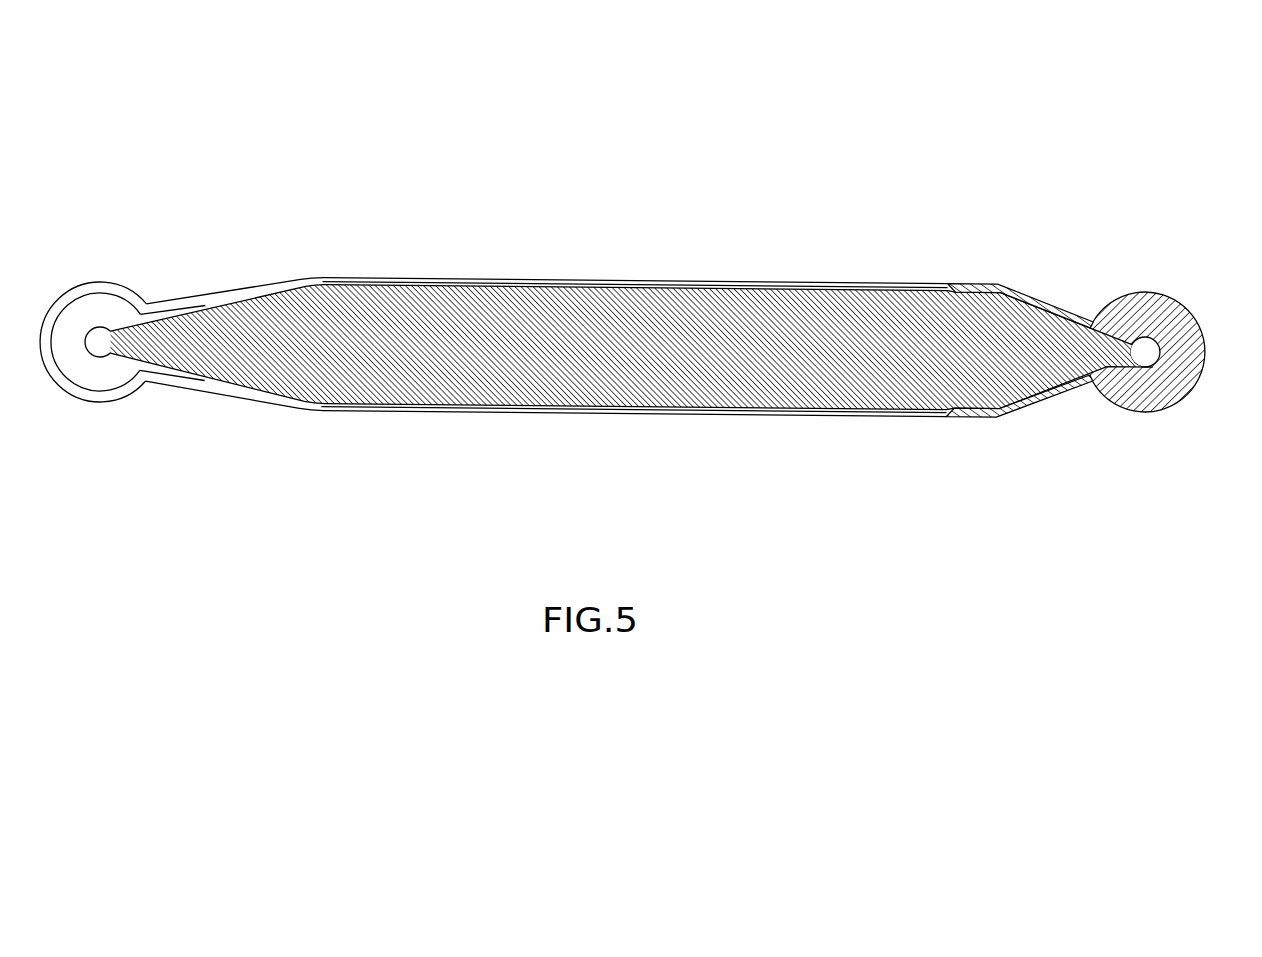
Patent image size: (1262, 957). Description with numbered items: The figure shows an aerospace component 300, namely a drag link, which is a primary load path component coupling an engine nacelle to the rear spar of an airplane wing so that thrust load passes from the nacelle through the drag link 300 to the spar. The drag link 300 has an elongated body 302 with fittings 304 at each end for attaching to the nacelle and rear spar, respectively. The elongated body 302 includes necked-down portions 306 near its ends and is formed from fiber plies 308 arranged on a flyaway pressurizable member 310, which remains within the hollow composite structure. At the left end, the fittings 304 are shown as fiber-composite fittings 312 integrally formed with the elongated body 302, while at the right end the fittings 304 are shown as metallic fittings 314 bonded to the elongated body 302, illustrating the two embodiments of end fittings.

The aerospace component 300 is at (788, 102).
The elongated body 302 is at (515, 278).
The fittings 304 is at (93, 252).
The necked-down portions 306 is at (212, 291).
The fiber plies 308 is at (737, 283).
The pressurizable member 310 is at (821, 358).
The fiber-composite fittings 312 is at (115, 401).
The metallic fittings 314 is at (1138, 414).